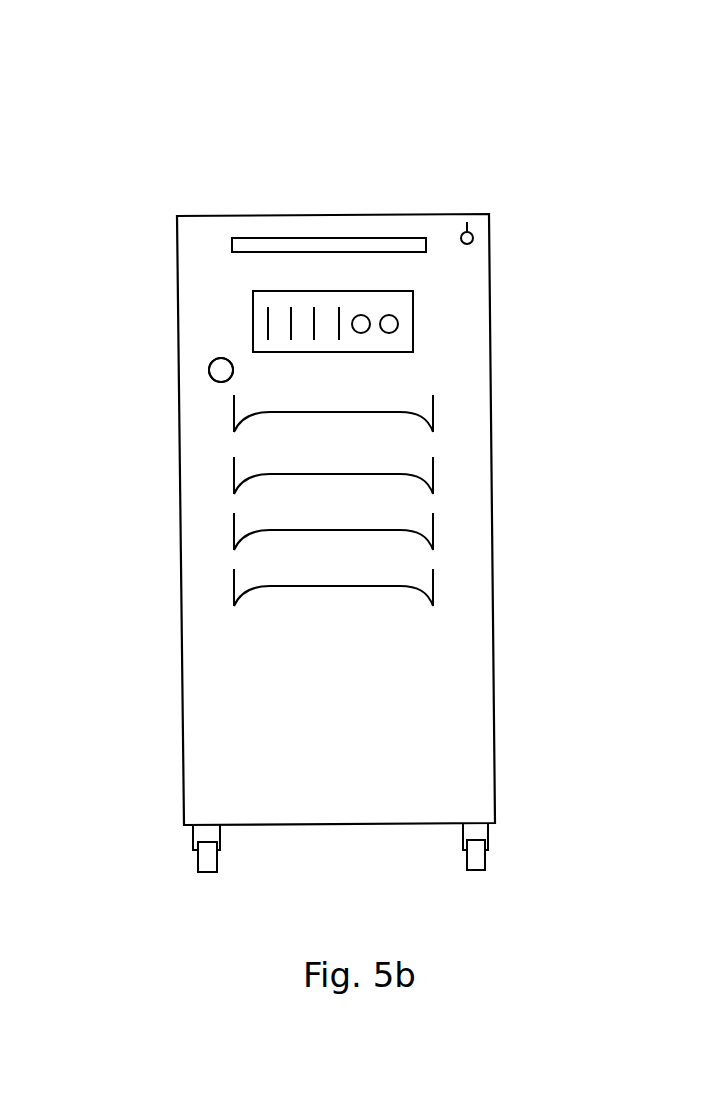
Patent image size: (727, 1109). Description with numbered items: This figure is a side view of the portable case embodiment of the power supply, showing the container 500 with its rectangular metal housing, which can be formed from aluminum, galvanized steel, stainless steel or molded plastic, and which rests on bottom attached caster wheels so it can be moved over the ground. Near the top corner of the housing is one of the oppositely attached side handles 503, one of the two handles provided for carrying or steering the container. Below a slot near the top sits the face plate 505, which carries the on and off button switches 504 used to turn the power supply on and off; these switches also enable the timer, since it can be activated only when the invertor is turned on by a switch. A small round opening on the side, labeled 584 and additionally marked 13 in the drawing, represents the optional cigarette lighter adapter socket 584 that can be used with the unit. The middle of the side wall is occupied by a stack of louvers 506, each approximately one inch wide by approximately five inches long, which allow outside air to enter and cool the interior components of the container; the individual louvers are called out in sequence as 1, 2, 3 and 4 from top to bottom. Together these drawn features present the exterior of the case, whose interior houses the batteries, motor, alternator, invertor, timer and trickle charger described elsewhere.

The container 500 is at (181, 98).
The side handle 503 is at (473, 236).
The on and off button switches 504 is at (389, 324).
The face plate 505 is at (413, 323).
The cigarette lighter adapter socket 584 is at (220, 370).
The connector 13 is at (213, 377).
The louvers 506 is at (265, 496).
The first shelf 1 is at (437, 410).
The second shelf 2 is at (437, 472).
The third shelf 3 is at (437, 528).
The fourth shelf 4 is at (437, 584).